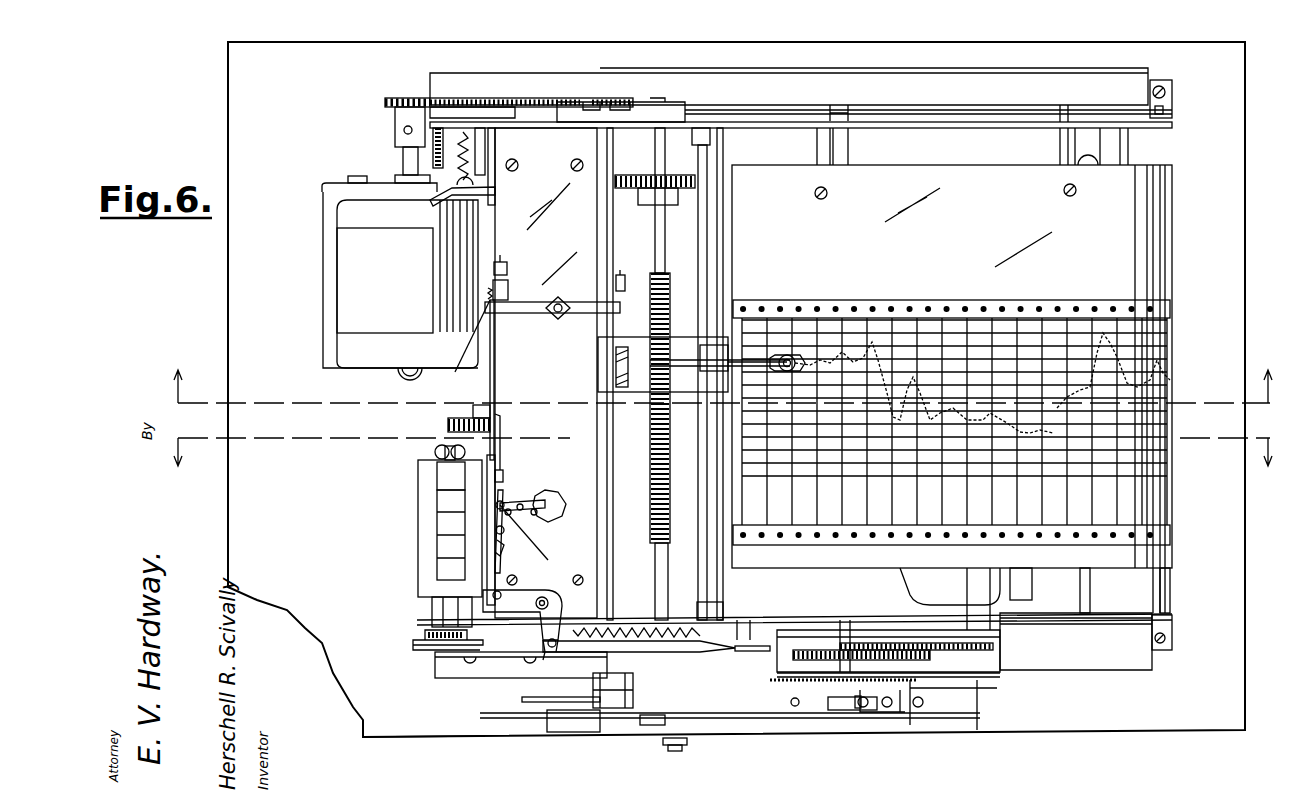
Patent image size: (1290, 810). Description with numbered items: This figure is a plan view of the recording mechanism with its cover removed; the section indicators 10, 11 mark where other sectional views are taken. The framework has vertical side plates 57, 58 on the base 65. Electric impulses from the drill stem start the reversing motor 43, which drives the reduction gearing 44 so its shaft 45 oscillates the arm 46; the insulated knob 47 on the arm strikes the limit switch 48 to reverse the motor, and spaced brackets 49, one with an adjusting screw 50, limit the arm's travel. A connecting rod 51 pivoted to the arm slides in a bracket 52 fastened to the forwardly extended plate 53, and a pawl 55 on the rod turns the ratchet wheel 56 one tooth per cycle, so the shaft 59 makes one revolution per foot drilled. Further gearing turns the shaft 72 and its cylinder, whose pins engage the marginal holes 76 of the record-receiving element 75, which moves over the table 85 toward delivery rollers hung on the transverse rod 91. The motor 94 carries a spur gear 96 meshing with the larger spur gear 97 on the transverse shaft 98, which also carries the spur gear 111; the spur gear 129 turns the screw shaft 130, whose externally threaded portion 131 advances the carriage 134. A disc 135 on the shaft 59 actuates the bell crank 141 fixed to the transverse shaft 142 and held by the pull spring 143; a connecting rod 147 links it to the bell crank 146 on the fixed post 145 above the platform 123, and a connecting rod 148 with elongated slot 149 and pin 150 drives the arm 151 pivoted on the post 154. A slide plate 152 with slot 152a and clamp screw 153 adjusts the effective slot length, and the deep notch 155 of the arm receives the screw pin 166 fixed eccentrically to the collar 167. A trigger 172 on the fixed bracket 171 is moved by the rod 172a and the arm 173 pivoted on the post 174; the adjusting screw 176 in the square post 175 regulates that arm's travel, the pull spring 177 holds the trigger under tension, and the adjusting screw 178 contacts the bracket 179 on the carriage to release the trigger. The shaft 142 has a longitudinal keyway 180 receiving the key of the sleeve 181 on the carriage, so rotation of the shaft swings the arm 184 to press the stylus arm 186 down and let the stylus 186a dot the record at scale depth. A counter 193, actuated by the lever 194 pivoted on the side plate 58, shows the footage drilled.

The section line 10- 10 is at (723, 374).
The section line 11- 11 is at (725, 464).
The motor 43 is at (912, 595).
The reduction gearing 44 is at (978, 690).
The shaft 45 is at (830, 645).
The arm 46 is at (835, 712).
The knob 47 is at (866, 708).
The limit switch 48 is at (887, 708).
The spaced brackets 49 is at (920, 708).
The adjusting screw 50 is at (945, 712).
The connecting rod 51 is at (750, 710).
The bracket 52 is at (570, 732).
The forwardly extended plate 53 is at (535, 702).
The pawl 55 is at (655, 725).
The ratchet wheel 56 is at (690, 740).
The vertical side plate 57 is at (790, 118).
The vertical side plate 58 is at (772, 615).
The shaft 59 is at (680, 752).
The base 65 is at (362, 718).
The shaft 72 is at (1090, 590).
The record-receiving element 75 is at (1025, 312).
The marginal holes 76 is at (908, 309).
The table 85 is at (1018, 165).
The transverse rod 91 is at (1170, 590).
The motor 94 is at (345, 288).
The spur gear 96 is at (385, 104).
The spur gear 97 is at (506, 106).
The transverse shaft 98 is at (435, 452).
The spur gear 111 is at (448, 425).
The platform 123 is at (492, 380).
The spur gear 129 is at (632, 175).
The screw shaft 130 is at (652, 230).
The externally threaded portion 131 is at (650, 508).
The carriage 134 is at (640, 392).
The disc 135 is at (745, 652).
The bell crank 141 is at (718, 650).
The transverse shaft 142 is at (720, 170).
The pull spring 143 is at (642, 626).
The fixed post 145 is at (548, 605).
The bell crank 146 is at (560, 594).
The connecting rod 147 is at (565, 655).
The connecting rod 148 is at (497, 573).
The elongated slot 149 is at (502, 500).
The pin 150 is at (522, 503).
The arm 151 is at (512, 514).
The slide plate 152 is at (503, 554).
The elongated slot 152a is at (470, 528).
The clamp screw 153 is at (505, 534).
The post 154 is at (530, 503).
The deep notch 155 is at (570, 540).
The screw pin 166 is at (560, 500).
The collar 167 is at (540, 512).
The fixed bracket 171 is at (500, 470).
The trigger 172 is at (487, 485).
The rod 172a is at (575, 368).
The arm 173 is at (560, 270).
The post 174 is at (556, 314).
The upstanding post 175 is at (508, 283).
The adjusting screw 176 is at (498, 255).
The pull spring 177 is at (464, 256).
The adjusting screw 178 is at (622, 270).
The bracket 179 is at (612, 362).
The longitudinal keyway 180 is at (702, 580).
The sleeve 181 is at (705, 347).
The arm 184 is at (690, 392).
The stylus arm 186 is at (748, 355).
The stylus 186a is at (790, 358).
The counter 193 is at (418, 522).
The lever 194 is at (500, 668).